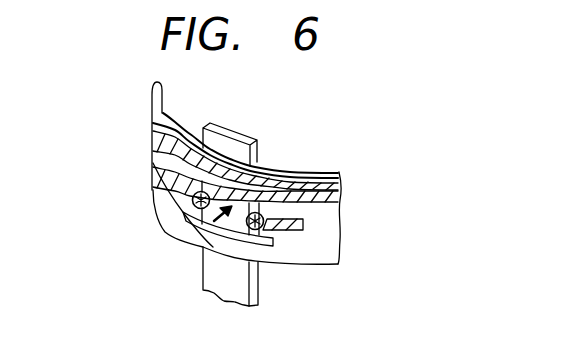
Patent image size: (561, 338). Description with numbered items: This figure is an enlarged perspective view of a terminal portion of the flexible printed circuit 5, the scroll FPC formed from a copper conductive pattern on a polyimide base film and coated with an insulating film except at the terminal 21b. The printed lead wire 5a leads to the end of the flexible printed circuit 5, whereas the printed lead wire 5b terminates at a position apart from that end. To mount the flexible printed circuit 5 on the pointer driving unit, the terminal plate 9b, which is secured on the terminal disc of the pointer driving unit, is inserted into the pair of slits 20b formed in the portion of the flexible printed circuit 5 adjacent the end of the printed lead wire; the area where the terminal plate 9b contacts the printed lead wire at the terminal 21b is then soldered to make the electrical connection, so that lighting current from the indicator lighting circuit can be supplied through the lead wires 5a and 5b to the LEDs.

The flexible printed circuit 5 is at (320, 240).
The printed lead wire 5a is at (330, 194).
The printed lead wire 5b is at (152, 190).
The terminal plate 9b is at (212, 137).
The slits 20b is at (281, 178).
The terminal 21b is at (200, 231).